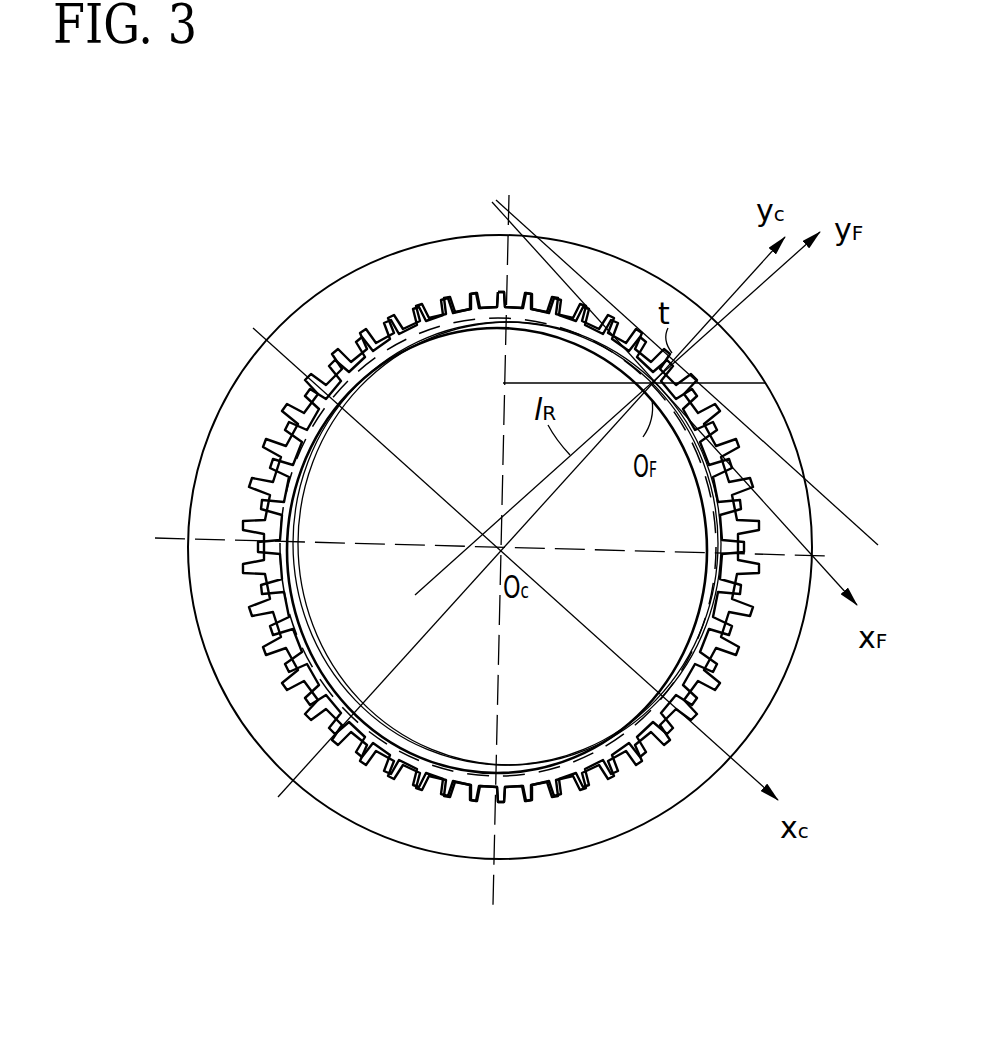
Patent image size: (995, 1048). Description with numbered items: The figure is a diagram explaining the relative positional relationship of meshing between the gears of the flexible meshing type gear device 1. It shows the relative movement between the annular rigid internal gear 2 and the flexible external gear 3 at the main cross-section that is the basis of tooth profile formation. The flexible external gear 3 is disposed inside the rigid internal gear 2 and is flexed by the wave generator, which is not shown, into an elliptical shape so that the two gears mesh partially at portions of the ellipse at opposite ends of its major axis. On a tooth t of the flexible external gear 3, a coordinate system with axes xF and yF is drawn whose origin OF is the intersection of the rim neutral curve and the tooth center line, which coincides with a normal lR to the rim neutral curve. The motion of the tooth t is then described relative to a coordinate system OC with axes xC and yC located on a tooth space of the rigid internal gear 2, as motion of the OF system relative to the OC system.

The flexible meshing type gear device 1 is at (365, 220).
The rigid internal gear 2 is at (368, 300).
The flexible external gear 3 is at (263, 445).